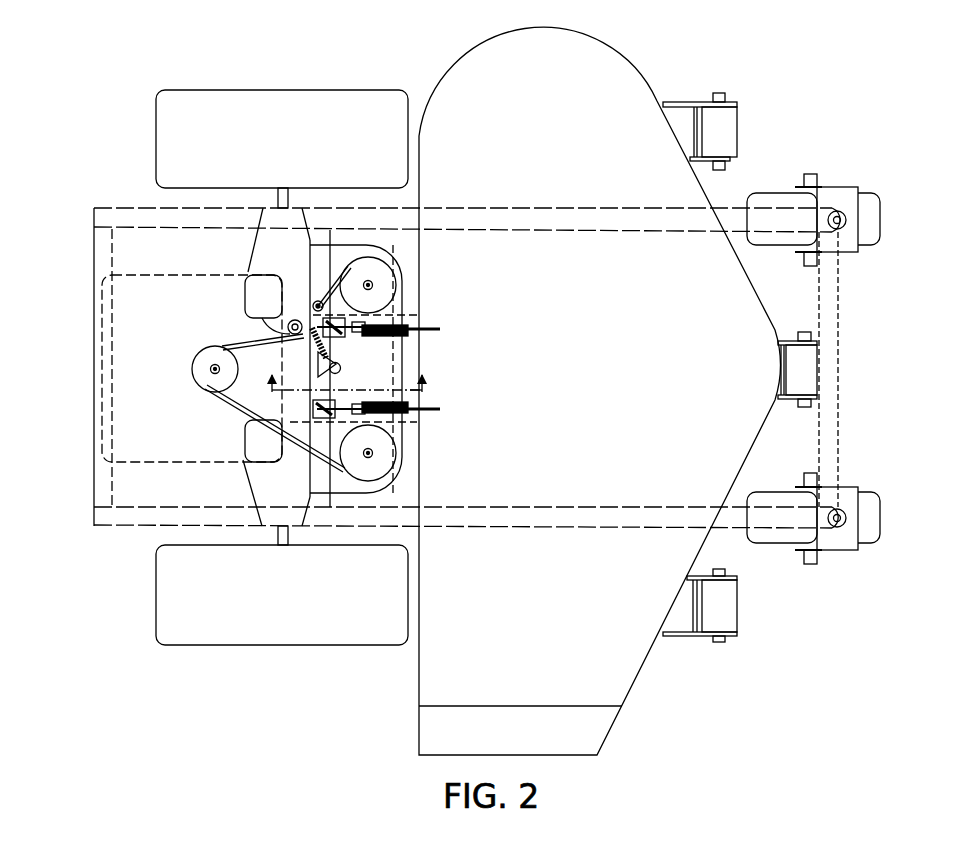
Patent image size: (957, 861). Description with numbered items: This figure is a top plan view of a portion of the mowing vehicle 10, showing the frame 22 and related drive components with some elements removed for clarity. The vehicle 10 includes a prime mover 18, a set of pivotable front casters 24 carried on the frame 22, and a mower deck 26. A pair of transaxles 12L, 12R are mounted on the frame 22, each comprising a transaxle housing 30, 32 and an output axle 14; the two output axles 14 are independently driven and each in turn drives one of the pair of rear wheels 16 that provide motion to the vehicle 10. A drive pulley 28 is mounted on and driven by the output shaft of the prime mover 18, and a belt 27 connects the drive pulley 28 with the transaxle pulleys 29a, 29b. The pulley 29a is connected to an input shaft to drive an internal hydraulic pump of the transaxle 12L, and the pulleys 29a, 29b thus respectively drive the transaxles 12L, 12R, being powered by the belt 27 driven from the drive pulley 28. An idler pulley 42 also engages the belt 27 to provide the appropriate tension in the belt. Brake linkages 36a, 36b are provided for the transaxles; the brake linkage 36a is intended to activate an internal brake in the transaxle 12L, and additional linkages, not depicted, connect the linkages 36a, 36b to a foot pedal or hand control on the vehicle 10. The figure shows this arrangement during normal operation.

The vehicle 10 is at (850, 103).
The left transaxle 12L is at (243, 289).
The right transaxle 12R is at (243, 437).
The output axle 14 is at (288, 197).
The wheel 16 is at (269, 142).
The prime mover 18 is at (197, 275).
The frame 22 is at (838, 403).
The front caster 24 is at (882, 212).
The mower deck 26 is at (521, 625).
The belt 27 is at (243, 343).
The drive pulley 28 is at (191, 369).
The transaxle pulley 29a is at (399, 278).
The transaxle pulley 29b is at (399, 462).
The transaxle housing 30 is at (268, 262).
The transaxle housing 32 is at (268, 492).
The brake linkage 36a is at (437, 327).
The brake linkage 36b is at (438, 414).
The idler pulley 42 is at (256, 273).